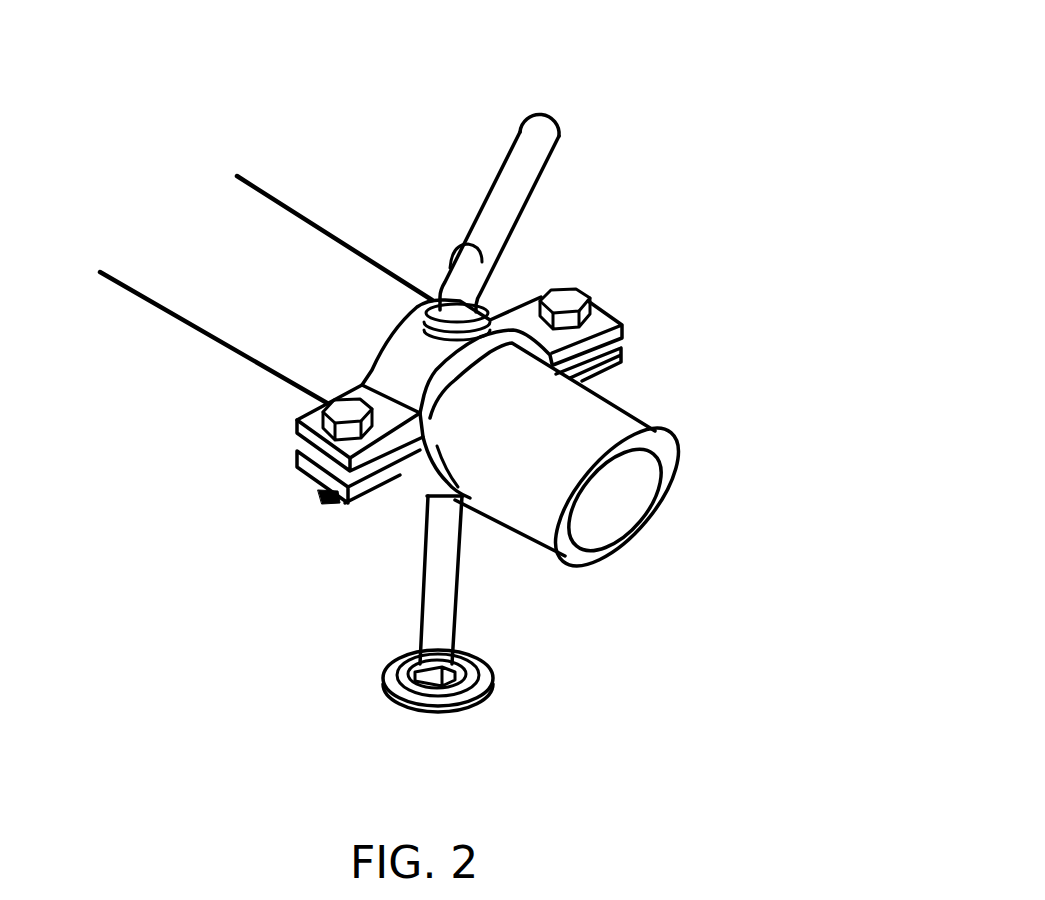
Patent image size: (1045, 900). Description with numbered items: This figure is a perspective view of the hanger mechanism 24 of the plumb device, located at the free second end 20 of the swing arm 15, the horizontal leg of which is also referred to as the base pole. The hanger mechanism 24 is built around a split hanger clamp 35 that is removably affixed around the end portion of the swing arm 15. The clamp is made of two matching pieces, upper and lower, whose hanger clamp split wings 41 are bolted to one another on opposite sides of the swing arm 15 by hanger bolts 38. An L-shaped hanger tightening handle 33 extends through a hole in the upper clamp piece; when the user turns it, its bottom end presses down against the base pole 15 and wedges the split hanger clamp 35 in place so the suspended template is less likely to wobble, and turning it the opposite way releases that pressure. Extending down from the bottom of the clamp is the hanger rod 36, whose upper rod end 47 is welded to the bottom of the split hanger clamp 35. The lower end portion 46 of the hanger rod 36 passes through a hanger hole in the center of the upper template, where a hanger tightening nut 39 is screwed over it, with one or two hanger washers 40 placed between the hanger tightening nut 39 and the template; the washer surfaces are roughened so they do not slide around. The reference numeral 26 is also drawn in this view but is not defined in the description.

The swing arm 15 is at (271, 118).
The second end 20 is at (617, 427).
The hanger mechanism 24 is at (688, 95).
The rod 26 is at (295, 228).
The hanger tightening handle 33 is at (498, 160).
The split hanger clamp 35 is at (492, 325).
The hanger rod 36 is at (440, 583).
The hanger bolts 38 is at (562, 303).
The hanger tightening nut 39 is at (460, 675).
The hanger washers 40 is at (467, 703).
The hanger clamp split wings 41 is at (307, 475).
The lower end portion 46 is at (432, 662).
The upper rod end 47 is at (433, 500).